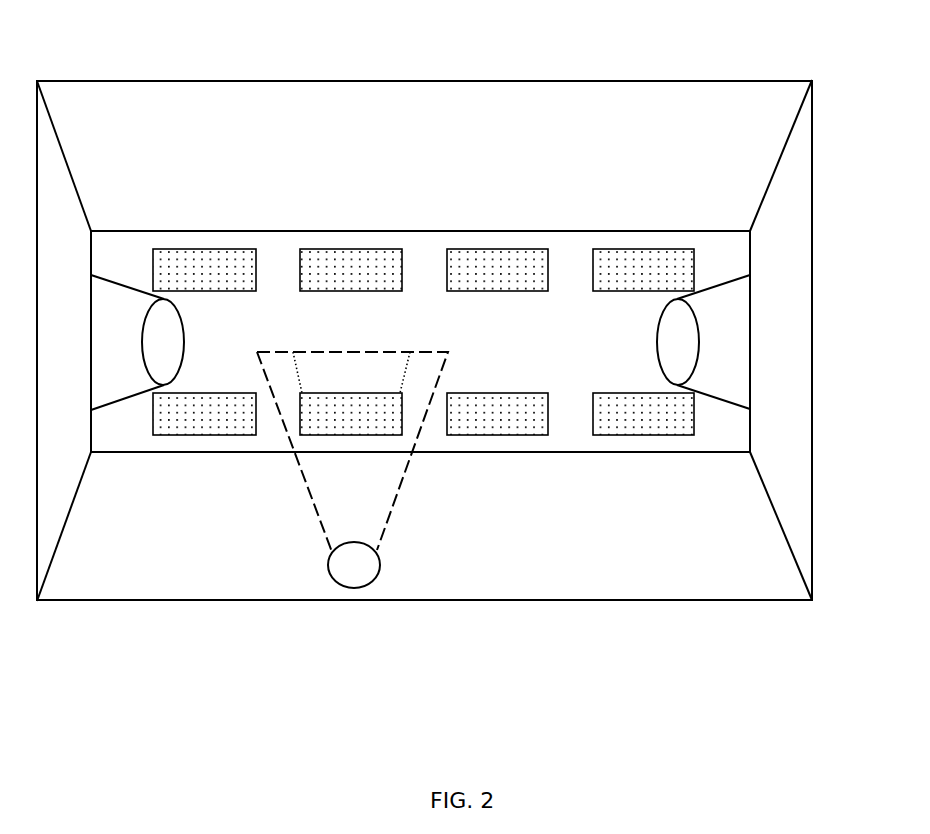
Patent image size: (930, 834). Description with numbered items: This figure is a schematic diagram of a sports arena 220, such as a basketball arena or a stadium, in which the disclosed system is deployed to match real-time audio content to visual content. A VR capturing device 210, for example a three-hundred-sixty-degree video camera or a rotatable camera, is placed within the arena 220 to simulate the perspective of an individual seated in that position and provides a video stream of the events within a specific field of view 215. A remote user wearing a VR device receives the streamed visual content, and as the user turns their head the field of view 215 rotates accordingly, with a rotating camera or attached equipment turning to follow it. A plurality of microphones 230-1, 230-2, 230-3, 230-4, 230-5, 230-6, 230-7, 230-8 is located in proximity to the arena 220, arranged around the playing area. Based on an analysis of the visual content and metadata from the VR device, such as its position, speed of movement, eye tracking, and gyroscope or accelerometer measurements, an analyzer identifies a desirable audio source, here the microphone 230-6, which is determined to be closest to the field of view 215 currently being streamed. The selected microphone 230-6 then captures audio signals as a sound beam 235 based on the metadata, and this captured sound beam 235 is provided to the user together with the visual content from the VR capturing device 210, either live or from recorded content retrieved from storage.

The sports arena 220 is at (786, 66).
The microphone 230-1 is at (185, 249).
The microphone 230-2 is at (307, 249).
The microphone 230-3 is at (472, 249).
The microphone 230-4 is at (630, 249).
The microphone 230-5 is at (175, 435).
The microphone 230-6 is at (328, 435).
The microphone 230-7 is at (467, 435).
The microphone 230-8 is at (617, 435).
The field of view 215 is at (427, 352).
The sound beam 235 is at (322, 362).
The VR capturing device 210 is at (378, 553).